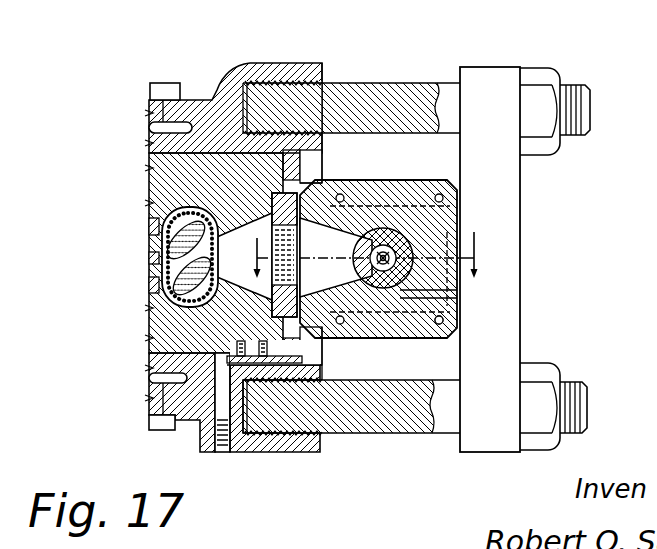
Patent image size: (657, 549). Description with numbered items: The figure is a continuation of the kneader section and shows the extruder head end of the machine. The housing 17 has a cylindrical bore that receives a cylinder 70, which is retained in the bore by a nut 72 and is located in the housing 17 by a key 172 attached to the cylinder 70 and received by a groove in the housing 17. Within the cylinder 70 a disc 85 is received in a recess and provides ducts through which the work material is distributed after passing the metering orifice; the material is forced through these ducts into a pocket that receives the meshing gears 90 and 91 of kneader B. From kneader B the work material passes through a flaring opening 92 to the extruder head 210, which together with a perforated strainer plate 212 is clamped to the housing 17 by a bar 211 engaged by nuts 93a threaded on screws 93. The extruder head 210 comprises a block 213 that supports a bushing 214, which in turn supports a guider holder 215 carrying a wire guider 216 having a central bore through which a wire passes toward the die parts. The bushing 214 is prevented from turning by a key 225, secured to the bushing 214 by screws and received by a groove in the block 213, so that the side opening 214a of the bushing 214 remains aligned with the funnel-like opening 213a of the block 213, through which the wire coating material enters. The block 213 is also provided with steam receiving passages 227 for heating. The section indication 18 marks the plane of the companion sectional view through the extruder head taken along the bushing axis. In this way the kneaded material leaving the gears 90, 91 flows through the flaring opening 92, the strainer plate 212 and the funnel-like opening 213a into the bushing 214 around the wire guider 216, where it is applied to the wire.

The housing 17 is at (200, 100).
The section line 18- 18 is at (365, 255).
The cylinder 70 is at (148, 353).
The nut 72 is at (318, 360).
The disc 85 is at (148, 240).
The meshing gear 90 is at (205, 190).
The meshing gear 91 is at (207, 318).
The flaring opening 92 is at (240, 270).
The screw 93 is at (591, 108).
The nut 93a is at (545, 67).
The key 172 is at (200, 425).
The extruder head 210 is at (440, 172).
The bar 211 is at (500, 57).
The perforated strainer plate 212 is at (282, 197).
The block 213 is at (408, 340).
The funnel-like opening 213a is at (315, 228).
The bushing 214 is at (393, 240).
The side opening 214a is at (356, 274).
The guider holder 215 is at (457, 298).
The wire guider 216 is at (392, 272).
The key 225 is at (457, 290).
The steam receiving passages 227 is at (440, 322).